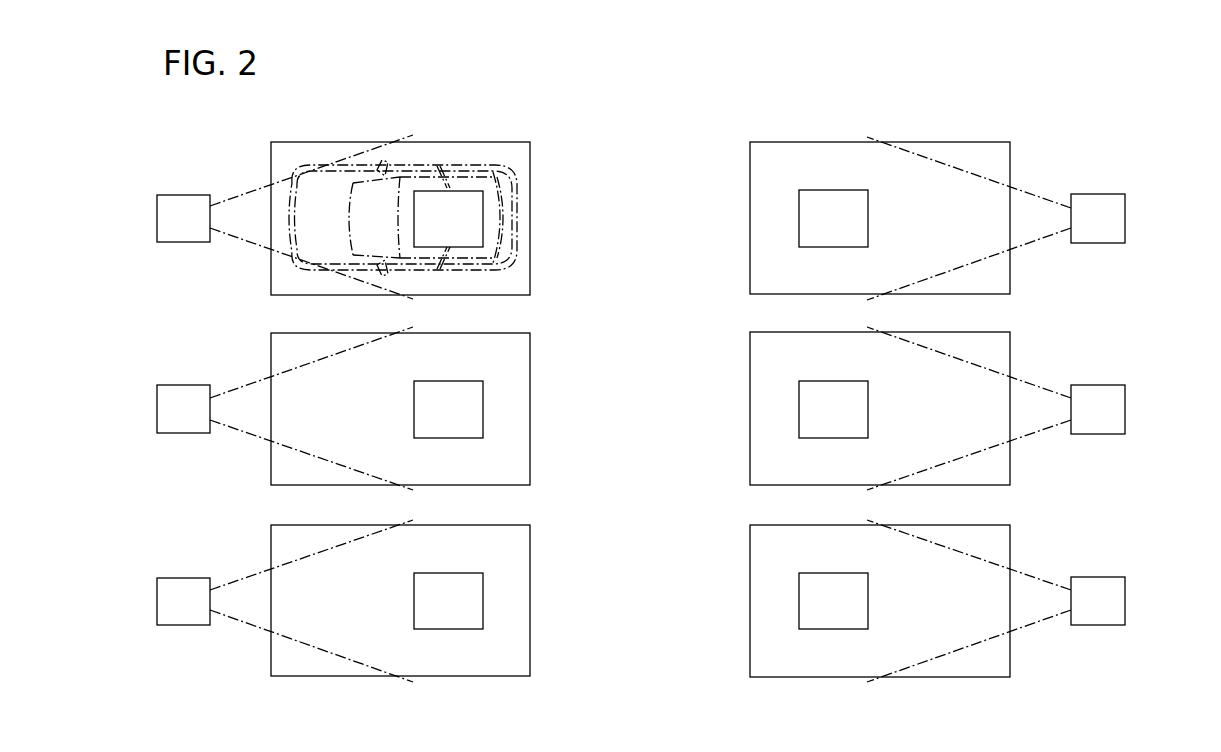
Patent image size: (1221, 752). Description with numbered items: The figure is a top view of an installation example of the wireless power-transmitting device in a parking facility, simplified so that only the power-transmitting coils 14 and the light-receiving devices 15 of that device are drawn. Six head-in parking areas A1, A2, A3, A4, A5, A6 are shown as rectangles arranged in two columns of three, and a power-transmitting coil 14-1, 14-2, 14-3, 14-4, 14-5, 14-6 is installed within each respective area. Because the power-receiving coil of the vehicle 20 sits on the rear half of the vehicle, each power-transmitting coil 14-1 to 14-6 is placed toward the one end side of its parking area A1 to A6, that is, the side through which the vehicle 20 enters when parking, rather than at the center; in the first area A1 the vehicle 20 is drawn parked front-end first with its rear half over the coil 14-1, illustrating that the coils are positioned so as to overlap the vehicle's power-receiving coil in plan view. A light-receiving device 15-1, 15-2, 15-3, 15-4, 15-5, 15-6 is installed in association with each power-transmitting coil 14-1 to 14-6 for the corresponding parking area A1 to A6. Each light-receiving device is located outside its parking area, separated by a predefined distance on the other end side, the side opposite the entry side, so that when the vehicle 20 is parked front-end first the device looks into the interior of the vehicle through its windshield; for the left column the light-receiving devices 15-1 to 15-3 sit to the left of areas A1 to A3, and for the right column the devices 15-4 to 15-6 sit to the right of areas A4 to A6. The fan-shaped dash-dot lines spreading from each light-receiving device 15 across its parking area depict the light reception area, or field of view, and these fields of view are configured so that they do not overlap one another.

The power-transmitting coil 14 is at (653, 454).
The power-transmitting coil 14-1 is at (473, 247).
The power-transmitting coil 14-2 is at (463, 438).
The power-transmitting coil 14-3 is at (455, 630).
The power-transmitting coil 14-4 is at (813, 247).
The power-transmitting coil 14-5 is at (803, 438).
The power-transmitting coil 14-6 is at (812, 629).
The light-receiving device 15 is at (662, 408).
The light-receiving device 15-1 is at (160, 193).
The light-receiving device 15-2 is at (160, 384).
The light-receiving device 15-3 is at (160, 577).
The light-receiving device 15-4 is at (1091, 193).
The light-receiving device 15-5 is at (1091, 384).
The light-receiving device 15-6 is at (1091, 576).
The vehicle 20 is at (513, 180).
The head-in parking area A1 is at (530, 210).
The head-in parking area A2 is at (531, 410).
The head-in parking area A3 is at (531, 602).
The head-in parking area A4 is at (750, 210).
The head-in parking area A5 is at (750, 410).
The head-in parking area A6 is at (750, 600).